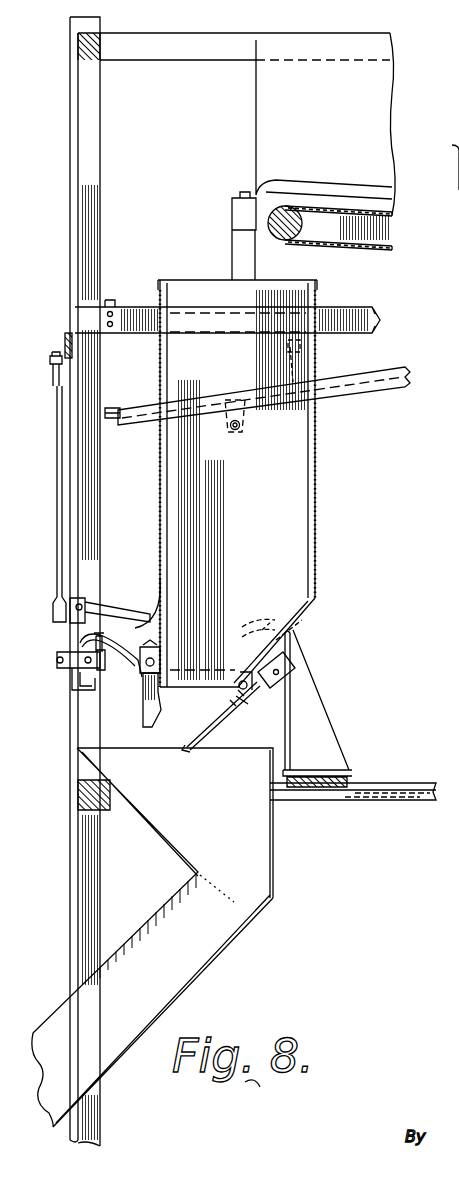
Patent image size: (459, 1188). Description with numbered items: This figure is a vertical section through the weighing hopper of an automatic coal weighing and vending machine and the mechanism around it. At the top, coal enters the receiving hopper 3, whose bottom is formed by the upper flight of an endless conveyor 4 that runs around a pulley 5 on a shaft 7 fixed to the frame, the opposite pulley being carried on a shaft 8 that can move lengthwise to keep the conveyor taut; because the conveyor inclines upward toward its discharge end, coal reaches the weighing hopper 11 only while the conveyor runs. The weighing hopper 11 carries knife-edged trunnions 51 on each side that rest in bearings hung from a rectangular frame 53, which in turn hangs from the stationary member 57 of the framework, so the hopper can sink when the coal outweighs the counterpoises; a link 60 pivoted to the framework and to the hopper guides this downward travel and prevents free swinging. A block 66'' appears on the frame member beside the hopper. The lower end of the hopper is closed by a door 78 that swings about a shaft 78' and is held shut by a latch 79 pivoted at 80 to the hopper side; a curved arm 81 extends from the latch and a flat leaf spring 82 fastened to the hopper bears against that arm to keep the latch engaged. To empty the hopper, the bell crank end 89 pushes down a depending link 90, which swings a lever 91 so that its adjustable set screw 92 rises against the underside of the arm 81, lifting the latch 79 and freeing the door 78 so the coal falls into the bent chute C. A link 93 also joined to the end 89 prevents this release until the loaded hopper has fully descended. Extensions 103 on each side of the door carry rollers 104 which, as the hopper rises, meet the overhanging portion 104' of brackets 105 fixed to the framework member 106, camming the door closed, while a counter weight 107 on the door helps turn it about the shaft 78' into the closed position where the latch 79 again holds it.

The receiving hopper 3 is at (256, 133).
The endless conveyor 4 is at (381, 246).
The pulley 5 is at (280, 234).
The shaft 7 is at (305, 228).
The shaft 8 is at (454, 152).
The weighing hopper 11 is at (318, 463).
The knife-edged trunnions 51 is at (238, 432).
The rectangular frame 53 is at (383, 390).
The stationary member 57 is at (385, 324).
The link 60 is at (115, 600).
The block 66'' is at (127, 430).
The door 78 is at (221, 717).
The shaft 78' is at (232, 673).
The latch 79 is at (153, 712).
The pivot 80 is at (148, 650).
The curved arm 81 is at (133, 665).
The flat leaf spring 82 is at (127, 616).
The end of bell crank 89 is at (52, 345).
The depending link 90 is at (57, 500).
The lever 91 is at (66, 680).
The adjustable set screw 92 is at (458, 535).
The link 93 is at (51, 372).
The extensions 103 is at (292, 660).
The rollers 104 is at (291, 626).
The overhanging portion 104' is at (280, 613).
The brackets 105 is at (312, 715).
The member 106 is at (385, 795).
The counter weight 107 is at (292, 668).
The chute C is at (265, 912).